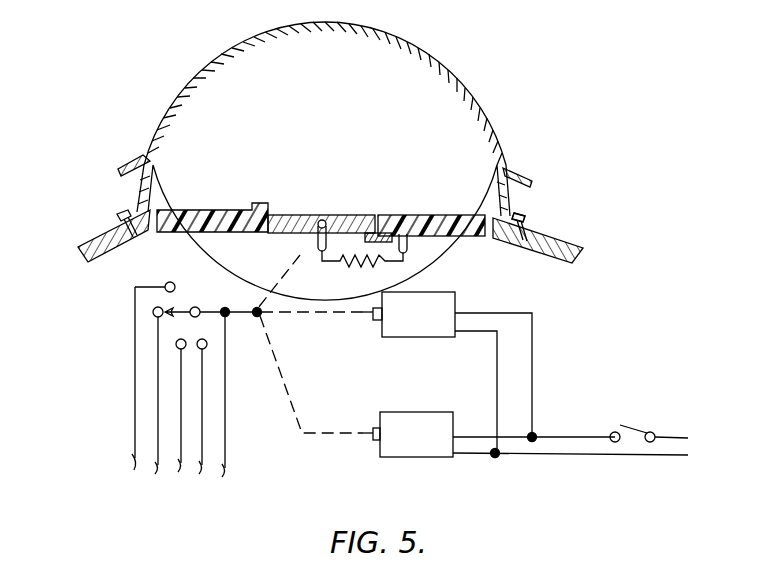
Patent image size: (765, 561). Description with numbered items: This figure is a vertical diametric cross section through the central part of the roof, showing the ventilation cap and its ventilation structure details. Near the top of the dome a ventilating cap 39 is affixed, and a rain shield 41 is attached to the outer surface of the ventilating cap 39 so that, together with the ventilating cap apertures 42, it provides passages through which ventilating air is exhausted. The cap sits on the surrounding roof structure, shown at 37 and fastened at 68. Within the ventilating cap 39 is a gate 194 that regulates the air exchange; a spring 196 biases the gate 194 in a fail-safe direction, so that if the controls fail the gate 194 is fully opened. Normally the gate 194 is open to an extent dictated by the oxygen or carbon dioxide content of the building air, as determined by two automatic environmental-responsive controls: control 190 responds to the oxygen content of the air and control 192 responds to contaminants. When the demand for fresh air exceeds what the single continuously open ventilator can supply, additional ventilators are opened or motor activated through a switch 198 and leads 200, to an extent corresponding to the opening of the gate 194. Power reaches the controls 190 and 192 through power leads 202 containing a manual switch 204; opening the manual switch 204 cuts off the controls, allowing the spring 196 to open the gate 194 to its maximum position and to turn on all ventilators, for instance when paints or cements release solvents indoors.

The base plate 37 is at (575, 243).
The ventilating cap 39 is at (484, 118).
The rain shield 41 is at (129, 166).
The ventilating cap apertures 42 is at (124, 188).
The screw 68 is at (530, 224).
The control 190 is at (412, 338).
The control 192 is at (432, 458).
The gate 194 is at (342, 213).
The spring 196 is at (360, 268).
The switch 198 is at (178, 306).
The leads 200 is at (207, 463).
The power leads 202 is at (577, 433).
The manual switch 204 is at (648, 426).